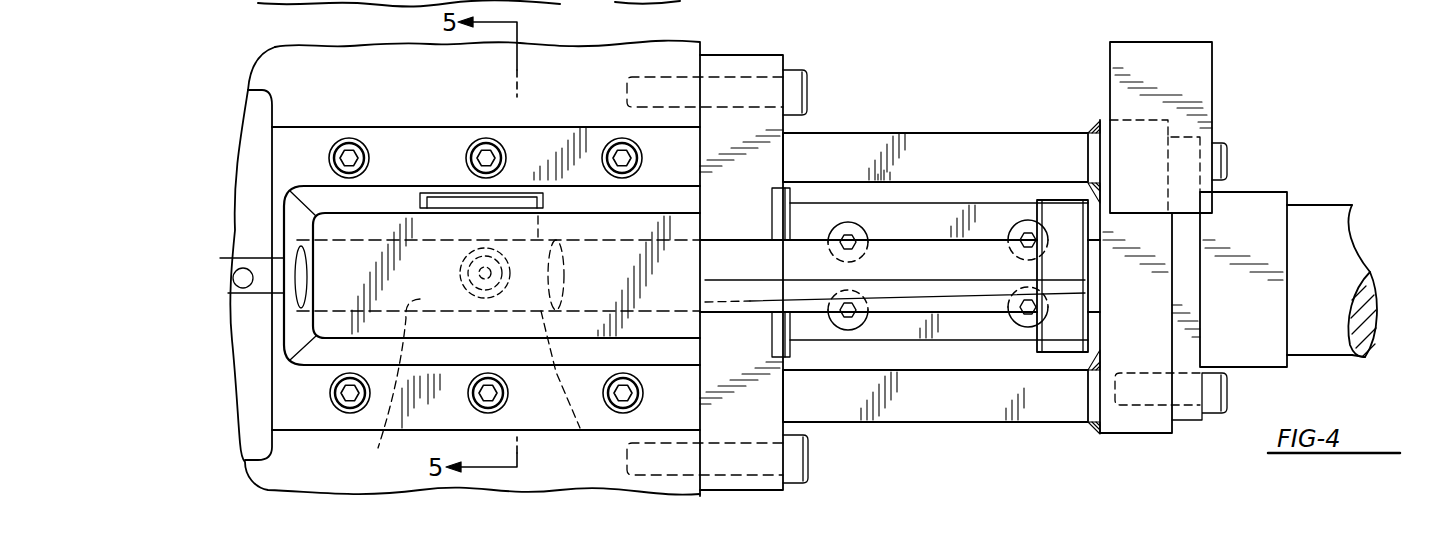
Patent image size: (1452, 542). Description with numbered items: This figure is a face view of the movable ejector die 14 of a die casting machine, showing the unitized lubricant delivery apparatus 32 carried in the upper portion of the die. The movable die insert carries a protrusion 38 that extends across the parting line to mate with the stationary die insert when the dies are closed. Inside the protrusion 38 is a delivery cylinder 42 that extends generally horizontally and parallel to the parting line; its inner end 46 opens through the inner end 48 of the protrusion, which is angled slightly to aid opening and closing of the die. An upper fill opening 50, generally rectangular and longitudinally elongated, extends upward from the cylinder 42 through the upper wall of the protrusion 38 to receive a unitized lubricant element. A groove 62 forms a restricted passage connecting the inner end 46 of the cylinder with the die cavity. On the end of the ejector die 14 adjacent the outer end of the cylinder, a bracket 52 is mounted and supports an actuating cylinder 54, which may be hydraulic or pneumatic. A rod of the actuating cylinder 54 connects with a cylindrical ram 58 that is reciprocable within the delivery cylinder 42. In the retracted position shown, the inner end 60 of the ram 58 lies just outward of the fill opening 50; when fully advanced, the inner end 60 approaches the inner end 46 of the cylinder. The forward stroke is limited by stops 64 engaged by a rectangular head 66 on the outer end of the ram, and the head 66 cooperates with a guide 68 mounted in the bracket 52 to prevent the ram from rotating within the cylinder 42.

The movable ejector die 14 is at (277, 67).
The unitized lubricant delivery apparatus 32 is at (790, 55).
The protrusion 38 is at (328, 327).
The delivery cylinder 42 is at (380, 439).
The inner end of the cylinder 46 is at (297, 303).
The inner end of the protrusion 48 is at (293, 220).
The upper fill opening 50 is at (505, 205).
The bracket 52 is at (935, 142).
The actuating cylinder 54 is at (1325, 218).
The ram 58 is at (918, 257).
The inner end of the ram 60 is at (577, 434).
The groove 62 is at (227, 265).
The stops 64 is at (790, 203).
The rectangular head 66 is at (1072, 227).
The guide 68 is at (1000, 333).